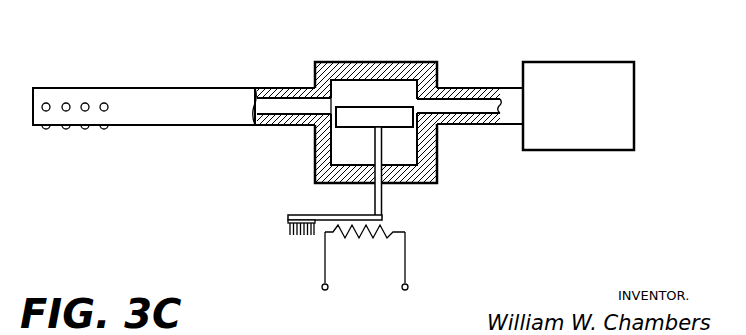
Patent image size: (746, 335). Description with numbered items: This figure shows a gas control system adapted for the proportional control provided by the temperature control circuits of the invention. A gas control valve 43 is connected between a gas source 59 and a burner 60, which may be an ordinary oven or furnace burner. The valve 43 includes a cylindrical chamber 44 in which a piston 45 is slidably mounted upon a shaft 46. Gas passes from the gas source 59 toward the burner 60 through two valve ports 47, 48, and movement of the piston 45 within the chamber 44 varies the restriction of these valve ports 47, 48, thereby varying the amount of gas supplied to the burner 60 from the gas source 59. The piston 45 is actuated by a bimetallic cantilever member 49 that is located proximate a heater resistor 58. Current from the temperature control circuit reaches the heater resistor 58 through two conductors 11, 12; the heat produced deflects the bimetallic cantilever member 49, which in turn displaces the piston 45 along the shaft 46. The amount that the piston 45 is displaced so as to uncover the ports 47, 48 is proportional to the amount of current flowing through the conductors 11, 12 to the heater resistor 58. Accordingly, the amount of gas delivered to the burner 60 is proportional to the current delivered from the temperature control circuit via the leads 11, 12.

The burner 60 is at (213, 129).
The valve port 48 is at (450, 89).
The gas control valve 43 is at (395, 63).
The cylindrical chamber 44 is at (340, 153).
The valve port 47 is at (330, 105).
The piston 45 is at (353, 112).
The shaft 46 is at (382, 202).
The bimetallic cantilever member 49 is at (320, 214).
The heater resistor 58 is at (363, 237).
The conductor 11 is at (323, 258).
The conductor 12 is at (407, 270).
The gas source 59 is at (635, 88).